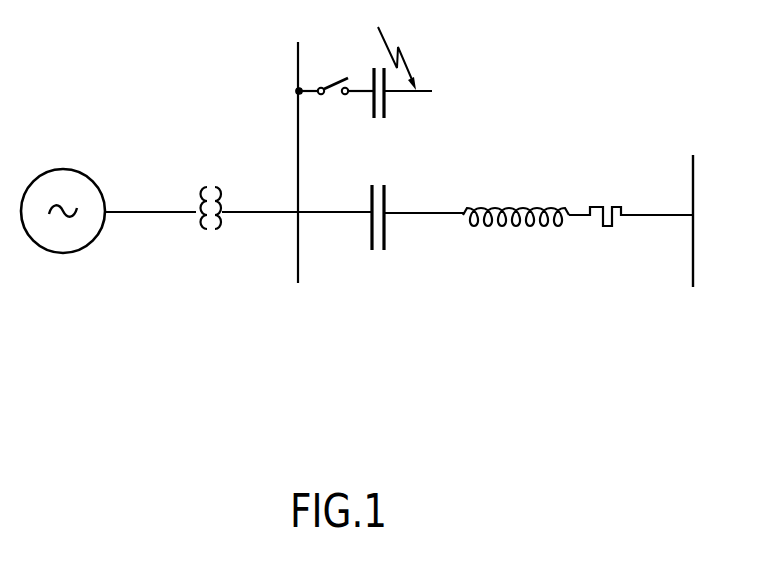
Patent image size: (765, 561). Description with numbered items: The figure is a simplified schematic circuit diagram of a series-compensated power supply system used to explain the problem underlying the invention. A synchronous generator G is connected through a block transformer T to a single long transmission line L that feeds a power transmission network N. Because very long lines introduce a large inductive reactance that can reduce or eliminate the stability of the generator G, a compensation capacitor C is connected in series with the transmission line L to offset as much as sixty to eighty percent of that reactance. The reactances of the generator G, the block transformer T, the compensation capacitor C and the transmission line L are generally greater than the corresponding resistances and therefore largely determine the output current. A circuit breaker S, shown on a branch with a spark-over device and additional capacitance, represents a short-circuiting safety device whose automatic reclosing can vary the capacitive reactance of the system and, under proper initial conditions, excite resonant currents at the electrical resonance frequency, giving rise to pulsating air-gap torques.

The generator G is at (63, 237).
The block transformer T is at (217, 243).
The circuit breaker S is at (343, 74).
The series connected compensation capacitor C is at (378, 240).
The transmission line L is at (516, 251).
The power transmission network N is at (709, 221).